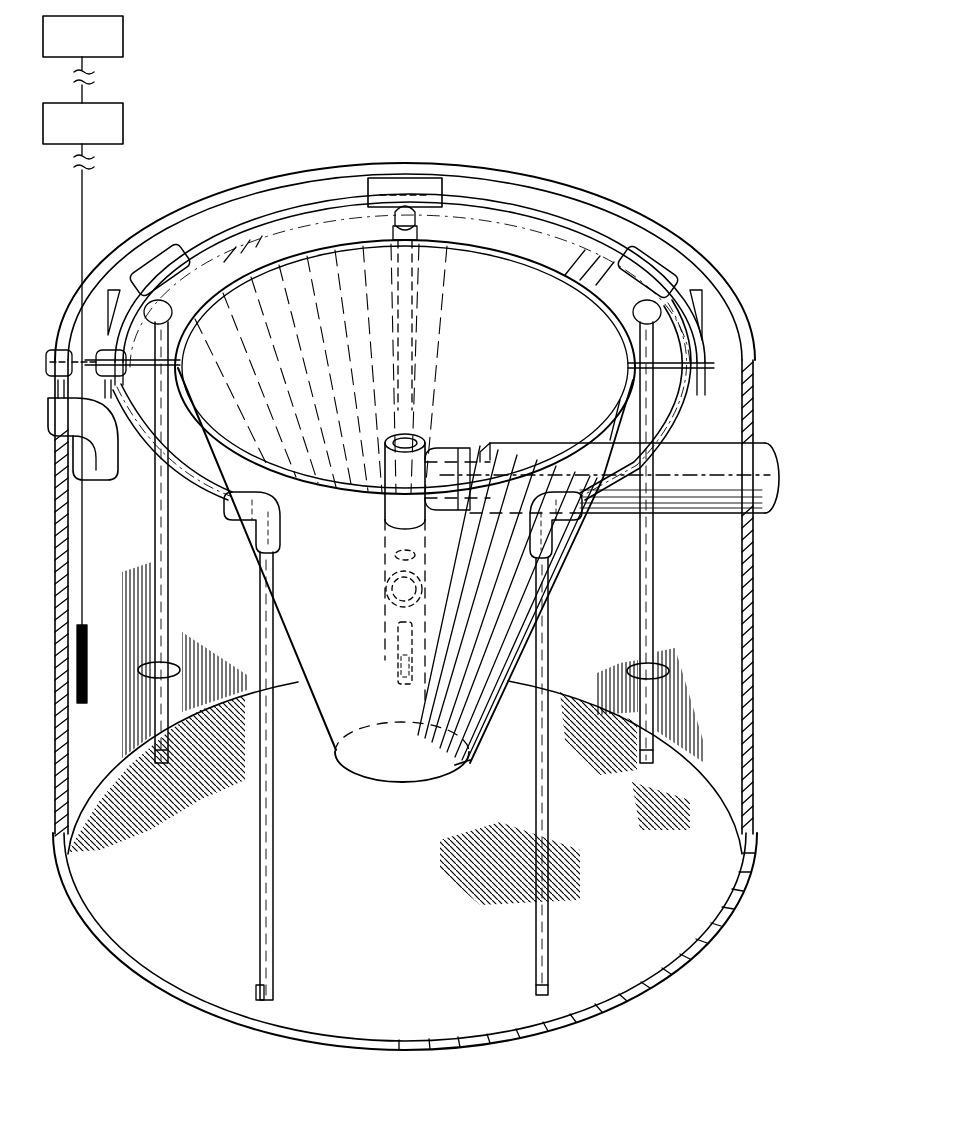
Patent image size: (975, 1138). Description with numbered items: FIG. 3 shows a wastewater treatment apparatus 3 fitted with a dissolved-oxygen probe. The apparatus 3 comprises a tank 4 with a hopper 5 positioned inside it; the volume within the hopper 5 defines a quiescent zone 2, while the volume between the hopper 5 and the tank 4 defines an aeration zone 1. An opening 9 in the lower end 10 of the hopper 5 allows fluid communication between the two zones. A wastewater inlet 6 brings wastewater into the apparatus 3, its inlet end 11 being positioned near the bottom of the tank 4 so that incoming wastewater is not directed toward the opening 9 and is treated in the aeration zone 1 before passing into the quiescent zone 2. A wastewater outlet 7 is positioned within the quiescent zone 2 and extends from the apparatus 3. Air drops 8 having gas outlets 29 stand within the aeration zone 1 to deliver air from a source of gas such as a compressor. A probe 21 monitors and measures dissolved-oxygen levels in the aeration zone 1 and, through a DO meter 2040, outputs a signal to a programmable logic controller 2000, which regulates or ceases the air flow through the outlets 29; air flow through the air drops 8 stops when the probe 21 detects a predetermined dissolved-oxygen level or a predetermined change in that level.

The aeration zone 1 is at (207, 597).
The quiescent zone 2 is at (365, 422).
The apparatus 3 is at (676, 210).
The tank 4 is at (752, 540).
The hopper 5 is at (478, 250).
The wastewater inlet 6 is at (88, 455).
The wastewater outlet 7 is at (440, 445).
The air drop 8 is at (169, 575).
The opening 9 is at (355, 771).
The lower end 10 is at (465, 762).
The inlet end 11 is at (100, 478).
The probe 21 is at (76, 708).
The gas outlet 29 is at (170, 752).
The programmable logic controller 2000 is at (125, 47).
The DO meter 2040 is at (125, 113).